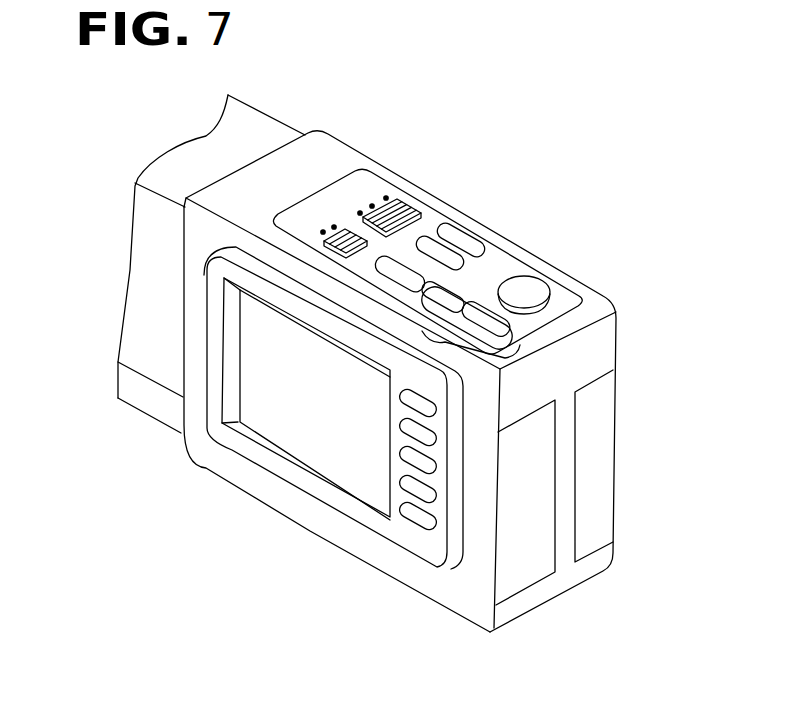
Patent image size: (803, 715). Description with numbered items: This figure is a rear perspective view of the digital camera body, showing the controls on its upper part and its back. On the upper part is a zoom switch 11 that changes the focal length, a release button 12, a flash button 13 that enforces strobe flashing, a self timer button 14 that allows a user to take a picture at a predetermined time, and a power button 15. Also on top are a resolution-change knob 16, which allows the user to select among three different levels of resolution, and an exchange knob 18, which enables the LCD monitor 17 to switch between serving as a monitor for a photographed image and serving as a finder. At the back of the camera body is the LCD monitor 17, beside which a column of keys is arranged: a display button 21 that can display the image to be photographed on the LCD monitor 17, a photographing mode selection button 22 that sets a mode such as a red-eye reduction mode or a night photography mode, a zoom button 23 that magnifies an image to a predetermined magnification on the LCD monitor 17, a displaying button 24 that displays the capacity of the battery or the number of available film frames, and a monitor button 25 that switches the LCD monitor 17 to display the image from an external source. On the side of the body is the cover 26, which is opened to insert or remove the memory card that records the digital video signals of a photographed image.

The zoom switch 11 is at (477, 292).
The release button 12 is at (542, 292).
The flash button 13 is at (480, 247).
The self timer button 14 is at (427, 243).
The power button 15 is at (393, 275).
The resolution-change knob 16 is at (378, 198).
The LCD monitor 17 is at (295, 440).
The exchange knob 18 is at (330, 227).
The display button 21 is at (430, 413).
The photographing mode selection button 22 is at (430, 442).
The zoom button 23 is at (430, 470).
The displaying button 24 is at (430, 500).
The monitor button 25 is at (447, 543).
The cover 26 is at (525, 573).